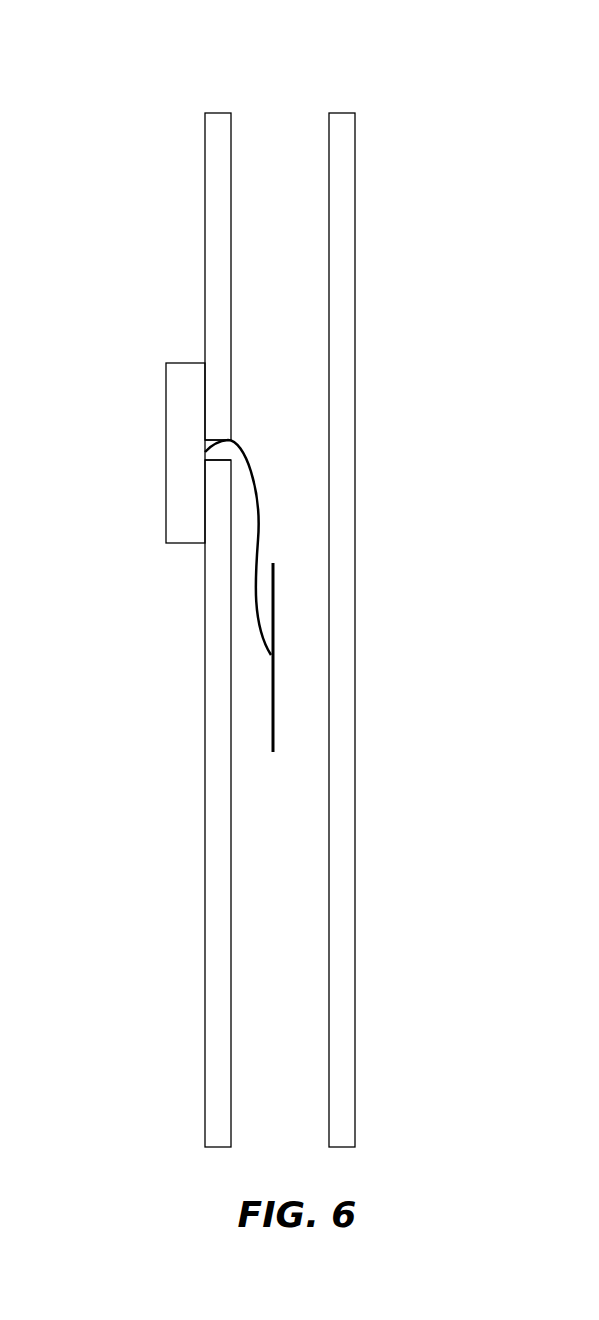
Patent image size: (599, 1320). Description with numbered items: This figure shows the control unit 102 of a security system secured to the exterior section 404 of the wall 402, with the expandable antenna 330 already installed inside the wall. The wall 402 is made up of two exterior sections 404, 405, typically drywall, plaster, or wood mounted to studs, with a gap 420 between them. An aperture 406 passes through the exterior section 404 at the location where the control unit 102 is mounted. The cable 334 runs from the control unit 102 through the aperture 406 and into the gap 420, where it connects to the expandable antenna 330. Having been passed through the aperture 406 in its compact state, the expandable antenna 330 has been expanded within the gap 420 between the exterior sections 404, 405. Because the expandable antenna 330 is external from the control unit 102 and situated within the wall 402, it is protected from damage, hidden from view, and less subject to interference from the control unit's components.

The wall 402 is at (307, 98).
The exterior section 404 is at (205, 283).
The exterior section 405 is at (355, 288).
The aperture 406 is at (208, 442).
The control unit 102 is at (166, 523).
The cable 334 is at (260, 513).
The expandable antenna 330 is at (275, 608).
The gap 420 is at (280, 630).